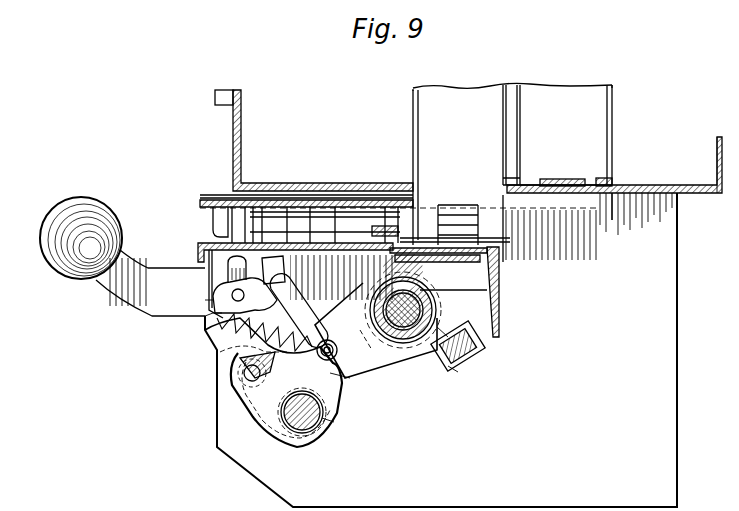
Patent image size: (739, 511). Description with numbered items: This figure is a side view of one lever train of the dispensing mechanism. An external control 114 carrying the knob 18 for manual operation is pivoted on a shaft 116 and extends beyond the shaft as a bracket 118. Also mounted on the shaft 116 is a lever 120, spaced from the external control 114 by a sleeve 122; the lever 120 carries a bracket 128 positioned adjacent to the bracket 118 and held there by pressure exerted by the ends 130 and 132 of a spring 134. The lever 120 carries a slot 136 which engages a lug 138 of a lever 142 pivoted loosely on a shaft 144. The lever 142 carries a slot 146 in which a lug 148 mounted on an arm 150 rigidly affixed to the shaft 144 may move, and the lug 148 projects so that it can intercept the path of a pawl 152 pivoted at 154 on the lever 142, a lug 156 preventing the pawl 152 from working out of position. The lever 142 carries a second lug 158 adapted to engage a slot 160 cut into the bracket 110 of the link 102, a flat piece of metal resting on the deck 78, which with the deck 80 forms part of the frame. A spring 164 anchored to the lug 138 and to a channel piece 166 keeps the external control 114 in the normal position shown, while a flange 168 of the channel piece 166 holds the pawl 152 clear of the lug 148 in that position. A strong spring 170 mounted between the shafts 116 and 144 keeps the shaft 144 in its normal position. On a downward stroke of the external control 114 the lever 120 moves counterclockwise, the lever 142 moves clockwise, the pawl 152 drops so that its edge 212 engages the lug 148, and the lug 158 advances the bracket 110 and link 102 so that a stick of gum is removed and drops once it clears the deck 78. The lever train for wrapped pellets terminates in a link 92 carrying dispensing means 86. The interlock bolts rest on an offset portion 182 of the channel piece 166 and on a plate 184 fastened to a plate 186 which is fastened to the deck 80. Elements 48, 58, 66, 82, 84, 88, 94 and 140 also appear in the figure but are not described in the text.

The knob 18 is at (57, 222).
The cylinder 48 is at (462, 98).
The cylinder wall 58 is at (593, 118).
The flange 66 is at (660, 185).
The deck 78 is at (225, 195).
The deck 80 is at (213, 240).
The thin plate 82 is at (215, 196).
The side plate 84 is at (500, 315).
The dispensing means 86 is at (398, 230).
The pad 88 is at (540, 240).
The link 92 is at (310, 225).
The pin 94 is at (335, 230).
The link 102 is at (210, 203).
The bracket 110 is at (206, 255).
The external control 114 is at (130, 262).
The shaft 116 is at (425, 292).
The bracket 118 is at (445, 325).
The lever 120 is at (380, 365).
The sleeve 122 is at (405, 348).
The bracket 128 is at (468, 356).
The spring end 130 is at (457, 370).
The spring end 132 is at (478, 336).
The spring 134 is at (440, 300).
The slot 136 is at (308, 311).
The lug 138 is at (350, 378).
The bolt 140 is at (327, 350).
The lever 142 is at (334, 418).
The shaft 144 is at (318, 428).
The slot 146 is at (216, 352).
The lug 148 is at (244, 374).
The arm 150 is at (240, 400).
The pawl 152 is at (215, 323).
The pivot 154 is at (250, 260).
The lug 156 is at (305, 300).
The second lug 158 is at (206, 300).
The slot 160 is at (198, 258).
The spring 164 is at (210, 345).
The channel piece 166 is at (212, 284).
The flange 168 is at (287, 232).
The strong spring 170 is at (283, 400).
The offset portion 182 is at (255, 225).
The plate 184 is at (482, 270).
The plate 186 is at (480, 262).
The edge 212 is at (240, 362).